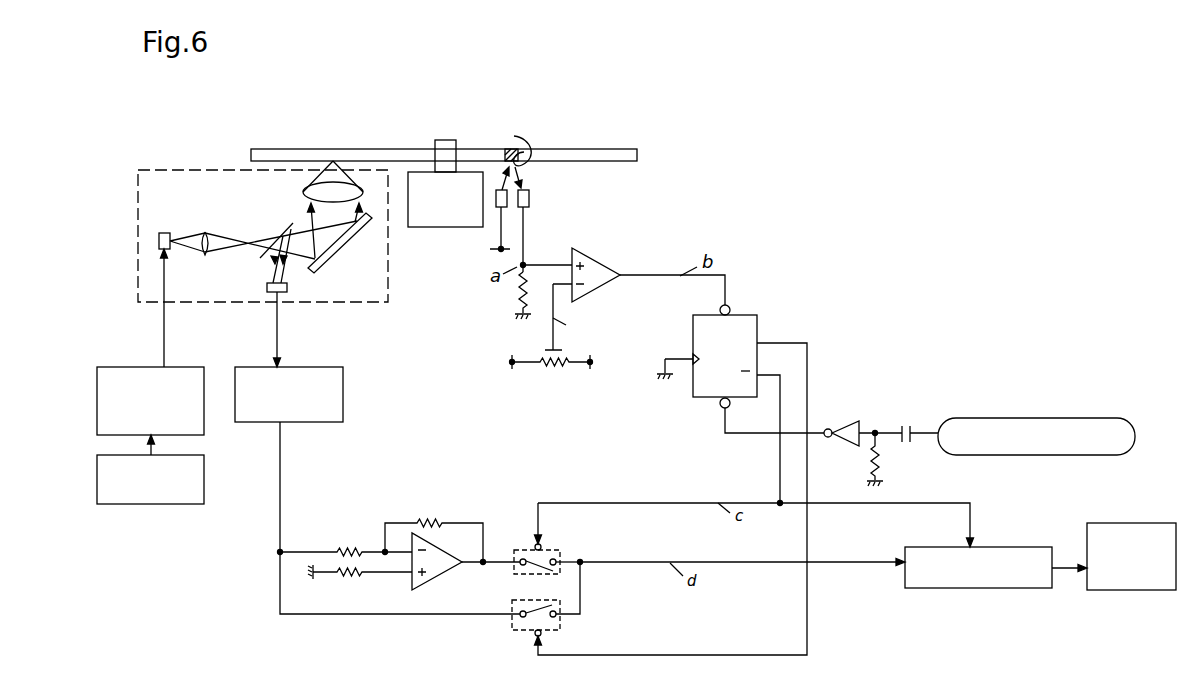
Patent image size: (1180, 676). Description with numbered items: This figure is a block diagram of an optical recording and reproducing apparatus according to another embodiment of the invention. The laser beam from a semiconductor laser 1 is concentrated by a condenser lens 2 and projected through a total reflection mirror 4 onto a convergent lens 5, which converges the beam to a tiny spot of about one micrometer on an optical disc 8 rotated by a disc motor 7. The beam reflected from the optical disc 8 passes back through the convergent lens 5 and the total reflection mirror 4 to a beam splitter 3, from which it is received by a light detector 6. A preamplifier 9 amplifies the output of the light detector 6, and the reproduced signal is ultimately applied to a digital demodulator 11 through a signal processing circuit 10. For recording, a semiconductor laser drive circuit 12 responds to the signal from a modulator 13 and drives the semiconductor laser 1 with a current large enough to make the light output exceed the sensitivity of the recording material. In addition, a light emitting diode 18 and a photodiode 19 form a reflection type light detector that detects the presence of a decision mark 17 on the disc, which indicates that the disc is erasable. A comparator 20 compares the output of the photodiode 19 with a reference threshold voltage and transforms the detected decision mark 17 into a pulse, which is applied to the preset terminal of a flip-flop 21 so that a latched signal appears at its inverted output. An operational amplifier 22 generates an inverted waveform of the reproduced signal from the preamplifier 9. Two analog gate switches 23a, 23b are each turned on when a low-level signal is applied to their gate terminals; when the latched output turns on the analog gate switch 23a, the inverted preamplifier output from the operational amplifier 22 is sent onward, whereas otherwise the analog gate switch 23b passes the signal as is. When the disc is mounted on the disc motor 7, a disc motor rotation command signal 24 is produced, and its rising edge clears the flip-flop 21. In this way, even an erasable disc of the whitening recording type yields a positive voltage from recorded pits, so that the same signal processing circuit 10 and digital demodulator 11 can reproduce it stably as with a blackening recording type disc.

The semiconductor laser 1 is at (168, 232).
The condenser lens 2 is at (206, 232).
The beam splitter 3 is at (291, 229).
The total reflection mirror 4 is at (337, 248).
The convergent lens 5 is at (305, 192).
The light detector 6 is at (268, 285).
The disc motor 7 is at (432, 227).
The optical disc 8 is at (365, 150).
The preamplifier 9 is at (343, 412).
The signal processing circuit 10 is at (1040, 589).
The digital demodulator 11 is at (1132, 591).
The semiconductor laser drive circuit 12 is at (97, 378).
The modulator 13 is at (97, 465).
The decision mark 17 is at (514, 142).
The light emitting diode 18 is at (487, 212).
The photodiode 19 is at (530, 199).
The comparator 20 is at (602, 268).
The flip-flop 21 is at (757, 316).
The operational amplifier 22 is at (440, 570).
The analog gate switch 23a is at (512, 551).
The analog gate switch 23b is at (511, 630).
The disc motor rotation command signal 24 is at (1075, 418).